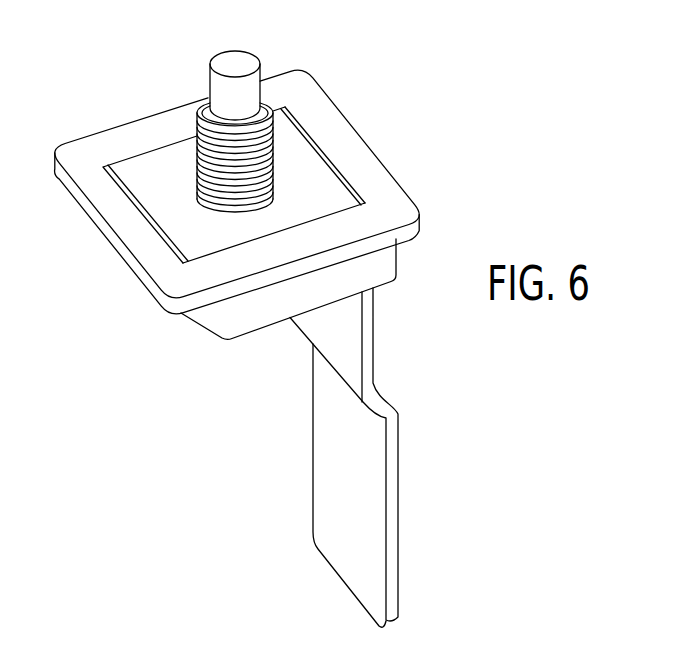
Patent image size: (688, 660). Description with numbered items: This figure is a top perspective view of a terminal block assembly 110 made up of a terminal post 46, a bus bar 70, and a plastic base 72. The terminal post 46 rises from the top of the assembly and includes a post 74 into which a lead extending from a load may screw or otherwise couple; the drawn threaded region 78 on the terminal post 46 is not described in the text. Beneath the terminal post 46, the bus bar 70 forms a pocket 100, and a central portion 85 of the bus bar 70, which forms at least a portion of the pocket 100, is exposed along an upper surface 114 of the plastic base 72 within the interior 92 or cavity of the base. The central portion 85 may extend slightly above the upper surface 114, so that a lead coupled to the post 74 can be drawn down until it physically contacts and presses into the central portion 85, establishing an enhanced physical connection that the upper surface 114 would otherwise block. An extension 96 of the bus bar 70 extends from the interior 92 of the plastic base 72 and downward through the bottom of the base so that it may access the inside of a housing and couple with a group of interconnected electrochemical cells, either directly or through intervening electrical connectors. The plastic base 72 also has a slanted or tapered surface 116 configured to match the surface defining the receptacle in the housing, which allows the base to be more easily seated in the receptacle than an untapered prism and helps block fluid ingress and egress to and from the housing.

The terminal post 46 is at (212, 121).
The post 74 is at (236, 62).
The threads 78 is at (235, 211).
The bus bar 70 is at (327, 140).
The plastic base 72 is at (372, 181).
The central portion 85 is at (163, 165).
The interior 92 is at (304, 121).
The extension 96 is at (374, 331).
The pocket 100 is at (234, 254).
The terminal block assembly 110 is at (235, 314).
The upper surface 114 is at (117, 216).
The tapered surface 116 is at (197, 326).